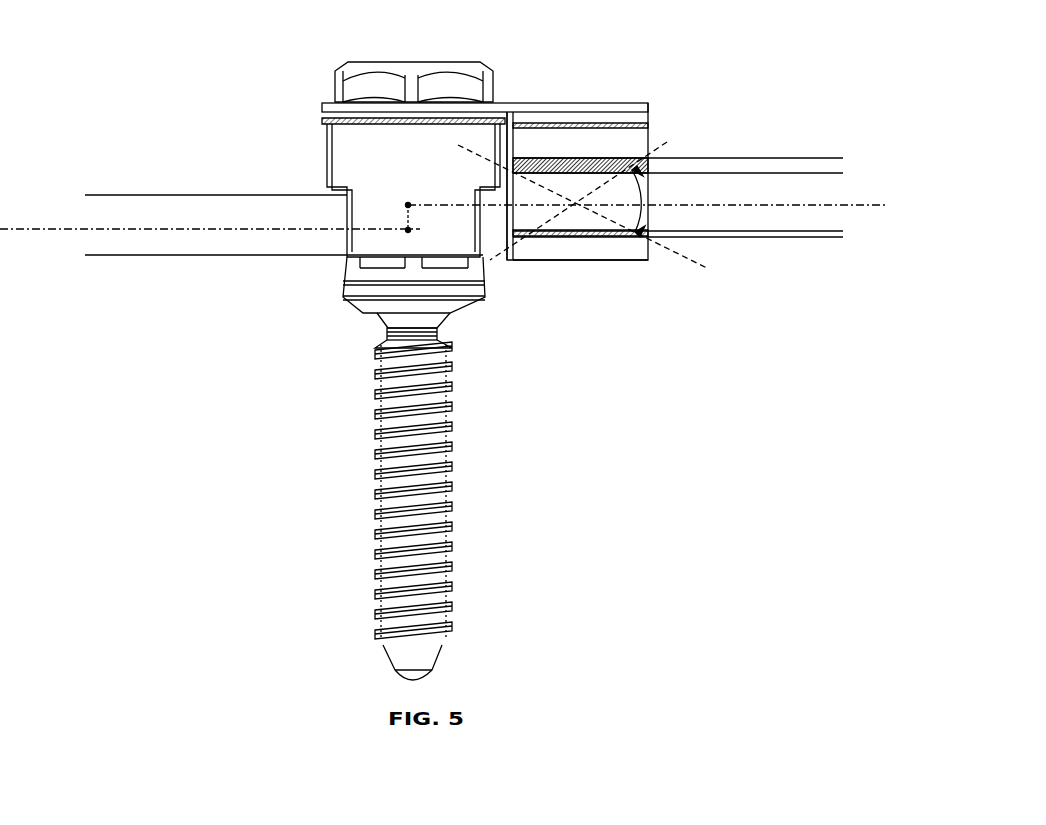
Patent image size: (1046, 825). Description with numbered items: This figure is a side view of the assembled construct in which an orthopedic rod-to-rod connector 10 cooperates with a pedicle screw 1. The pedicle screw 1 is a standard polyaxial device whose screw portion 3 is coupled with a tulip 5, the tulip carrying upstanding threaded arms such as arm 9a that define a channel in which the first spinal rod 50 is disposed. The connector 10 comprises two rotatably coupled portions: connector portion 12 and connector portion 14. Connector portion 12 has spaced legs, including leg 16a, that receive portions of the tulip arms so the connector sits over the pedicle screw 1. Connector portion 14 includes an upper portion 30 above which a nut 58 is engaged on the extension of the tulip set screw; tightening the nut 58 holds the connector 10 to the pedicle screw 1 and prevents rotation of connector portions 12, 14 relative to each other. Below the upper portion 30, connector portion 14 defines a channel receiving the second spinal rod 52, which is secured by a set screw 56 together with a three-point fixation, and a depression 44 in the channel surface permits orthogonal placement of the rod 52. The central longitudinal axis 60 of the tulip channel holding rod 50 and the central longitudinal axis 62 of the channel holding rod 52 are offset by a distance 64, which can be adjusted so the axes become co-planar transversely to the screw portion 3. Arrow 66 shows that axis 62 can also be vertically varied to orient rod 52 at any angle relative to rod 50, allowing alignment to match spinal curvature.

The orthopedic rod-to-rod connector 10 is at (818, 60).
The connector portion 12 is at (485, 180).
The connector portion 14 is at (580, 245).
The upper portion 30 is at (577, 181).
The nut 58 is at (414, 82).
The set screw 56 is at (627, 163).
The depression 44 is at (580, 233).
The arrow 66 is at (582, 205).
The central longitudinal axis 62 is at (852, 205).
The second spinal rod 52 is at (820, 237).
The first spinal rod 50 is at (190, 195).
The central longitudinal axis 60 is at (72, 232).
The distance 64 is at (406, 216).
The leg 16a is at (414, 250).
The threaded arm 9a is at (353, 258).
The pedicle screw 1 is at (244, 345).
The tulip 5 is at (345, 285).
The screw portion 3 is at (385, 455).